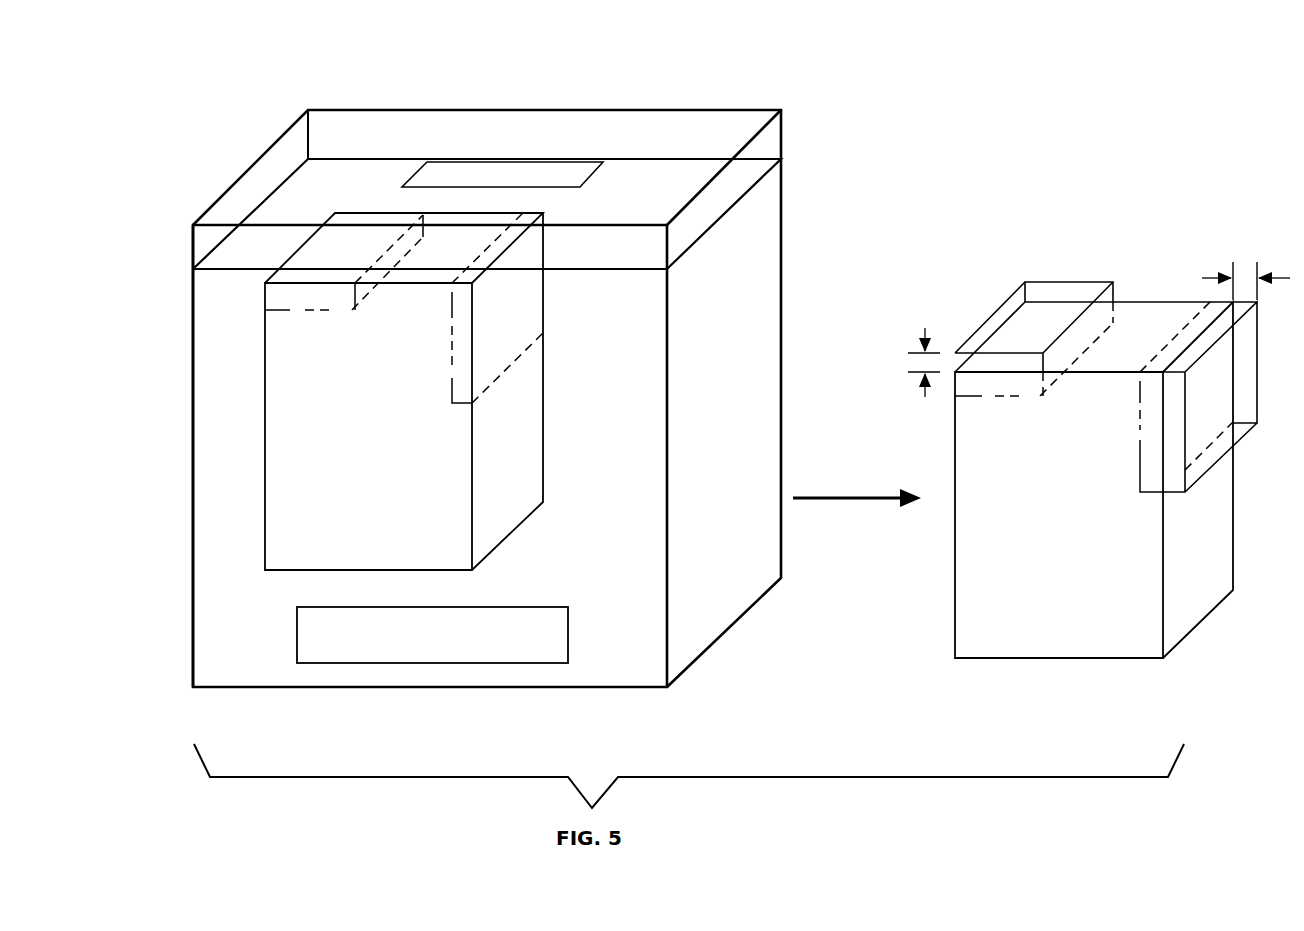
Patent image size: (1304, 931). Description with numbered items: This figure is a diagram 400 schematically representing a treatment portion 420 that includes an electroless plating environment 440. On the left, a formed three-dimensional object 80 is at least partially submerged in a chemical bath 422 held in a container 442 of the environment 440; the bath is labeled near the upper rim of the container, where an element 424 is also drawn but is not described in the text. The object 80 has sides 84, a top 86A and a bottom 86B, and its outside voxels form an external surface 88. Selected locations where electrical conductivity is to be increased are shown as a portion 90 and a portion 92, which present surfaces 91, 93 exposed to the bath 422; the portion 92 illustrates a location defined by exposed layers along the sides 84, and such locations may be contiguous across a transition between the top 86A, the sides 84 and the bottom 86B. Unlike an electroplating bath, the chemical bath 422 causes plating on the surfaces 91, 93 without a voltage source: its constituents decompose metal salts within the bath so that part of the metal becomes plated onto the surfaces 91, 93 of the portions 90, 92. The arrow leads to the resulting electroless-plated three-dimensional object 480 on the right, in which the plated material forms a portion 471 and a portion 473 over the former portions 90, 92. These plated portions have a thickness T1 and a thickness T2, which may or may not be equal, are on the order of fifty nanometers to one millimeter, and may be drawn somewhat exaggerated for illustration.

The diagram 400 is at (689, 417).
The treatment portion 420 is at (497, 73).
The chemical bath 422 is at (590, 172).
The tank rim 424 is at (753, 188).
The container 442 is at (191, 370).
The electroless plating environment 440 is at (297, 637).
The 3D object 80 is at (318, 478).
The sides 84 is at (747, 525).
The external surface 88 is at (1094, 480).
The portion 90 is at (286, 316).
The surface 91 is at (374, 250).
The portion 92 is at (450, 378).
The surface 93 is at (510, 300).
The electroless-plated 3D object 480 is at (1093, 468).
The portion 471 is at (1093, 281).
The portion 473 is at (1246, 363).
The top 86A is at (1143, 310).
The bottom 86B is at (1058, 660).
The thickness T1 is at (911, 362).
The thickness T2 is at (1246, 272).